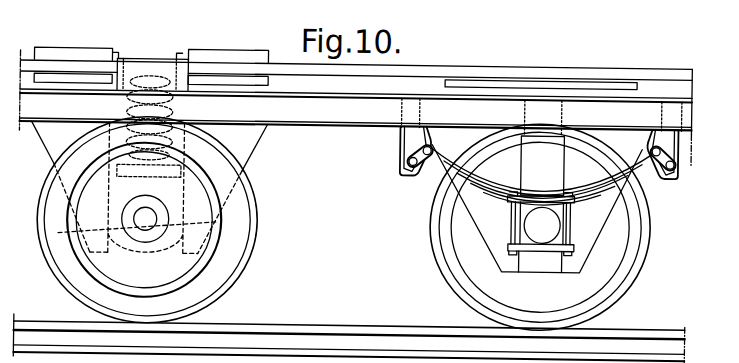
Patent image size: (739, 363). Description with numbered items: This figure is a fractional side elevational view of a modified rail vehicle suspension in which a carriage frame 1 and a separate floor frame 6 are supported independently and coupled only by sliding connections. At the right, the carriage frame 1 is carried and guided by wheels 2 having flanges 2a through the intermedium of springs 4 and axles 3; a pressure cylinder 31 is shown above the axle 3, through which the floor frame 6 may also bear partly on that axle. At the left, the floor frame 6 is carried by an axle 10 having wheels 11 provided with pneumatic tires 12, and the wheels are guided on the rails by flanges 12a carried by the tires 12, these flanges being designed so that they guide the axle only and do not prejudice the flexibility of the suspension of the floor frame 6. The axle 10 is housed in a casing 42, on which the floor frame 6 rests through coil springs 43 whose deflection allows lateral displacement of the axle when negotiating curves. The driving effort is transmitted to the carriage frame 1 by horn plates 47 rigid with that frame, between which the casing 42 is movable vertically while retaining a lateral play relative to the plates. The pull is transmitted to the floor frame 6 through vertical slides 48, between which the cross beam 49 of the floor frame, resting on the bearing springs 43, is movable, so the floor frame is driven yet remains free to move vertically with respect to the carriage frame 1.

The carriage frame 1 is at (347, 118).
The wheels 2 is at (474, 285).
The flanges 2a is at (448, 276).
The axles 3 is at (527, 219).
The springs 4 is at (470, 163).
The floor frame 6 is at (467, 67).
The axle 10 is at (147, 224).
The wheels 11 is at (85, 261).
The pneumatic tires 12 is at (236, 255).
The flanges 12a is at (230, 280).
The pressure cylinders 31 is at (562, 155).
The casing 42 is at (222, 218).
The coil springs 43 is at (168, 107).
The horn plates 47 is at (258, 137).
The vertical slides 48 is at (184, 49).
The cross beam 49 is at (130, 71).